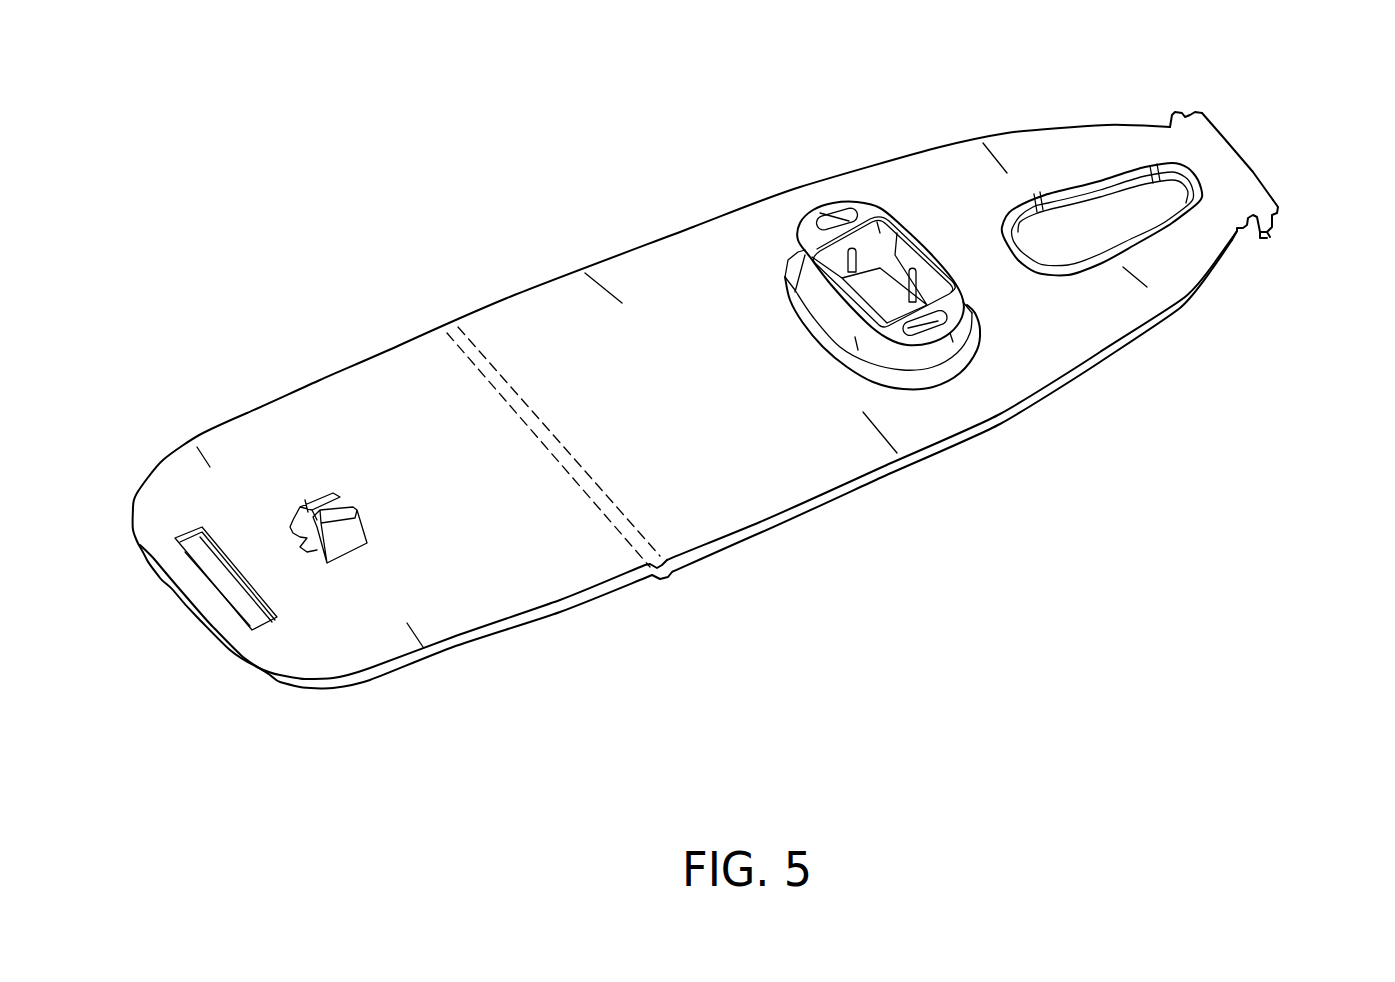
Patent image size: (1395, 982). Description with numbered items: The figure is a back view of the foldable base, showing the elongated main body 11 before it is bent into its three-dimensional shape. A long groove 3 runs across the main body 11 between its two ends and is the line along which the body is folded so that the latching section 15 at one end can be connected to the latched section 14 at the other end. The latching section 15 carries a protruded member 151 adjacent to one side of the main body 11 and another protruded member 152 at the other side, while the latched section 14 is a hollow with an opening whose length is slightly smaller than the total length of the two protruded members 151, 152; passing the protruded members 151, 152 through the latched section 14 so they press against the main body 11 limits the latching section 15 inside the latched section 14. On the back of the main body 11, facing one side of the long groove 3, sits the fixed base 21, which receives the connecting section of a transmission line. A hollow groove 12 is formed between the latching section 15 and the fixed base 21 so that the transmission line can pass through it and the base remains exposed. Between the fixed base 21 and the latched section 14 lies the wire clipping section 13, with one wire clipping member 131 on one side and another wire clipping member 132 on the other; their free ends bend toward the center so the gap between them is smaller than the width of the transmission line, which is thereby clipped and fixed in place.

The main body 11 is at (577, 193).
The hollow groove 12 is at (1080, 217).
The wire clipping section 13 is at (331, 513).
The wire clipping member 131 is at (327, 503).
The wire clipping member 132 is at (340, 540).
The latched section 14 is at (220, 572).
The latching section 15 is at (1230, 173).
The protruded member 151 is at (1190, 117).
The protruded member 152 is at (1270, 212).
The fixed base 21 is at (950, 343).
The long groove 3 is at (503, 380).